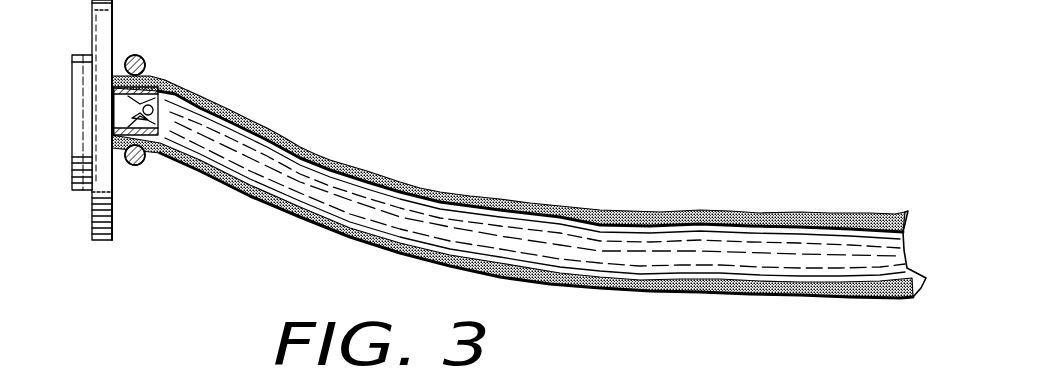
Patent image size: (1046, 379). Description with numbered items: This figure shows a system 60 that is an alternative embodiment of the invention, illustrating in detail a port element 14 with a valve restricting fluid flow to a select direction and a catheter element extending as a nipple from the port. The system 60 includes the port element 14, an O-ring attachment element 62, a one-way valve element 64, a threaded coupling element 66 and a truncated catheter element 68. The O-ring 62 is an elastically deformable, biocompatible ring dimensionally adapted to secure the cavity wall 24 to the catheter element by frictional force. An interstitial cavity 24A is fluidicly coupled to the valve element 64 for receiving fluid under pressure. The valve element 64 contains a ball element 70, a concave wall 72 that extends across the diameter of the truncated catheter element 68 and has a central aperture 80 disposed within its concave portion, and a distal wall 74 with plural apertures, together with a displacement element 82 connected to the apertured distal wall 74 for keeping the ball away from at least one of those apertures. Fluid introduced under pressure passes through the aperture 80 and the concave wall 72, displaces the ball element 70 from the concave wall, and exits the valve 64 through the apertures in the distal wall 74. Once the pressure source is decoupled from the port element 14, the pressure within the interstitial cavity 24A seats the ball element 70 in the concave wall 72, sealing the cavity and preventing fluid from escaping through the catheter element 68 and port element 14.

The port element 14 is at (112, 23).
The cavity wall 24 is at (412, 184).
The interstitial cavity 24A is at (513, 240).
The system 60 is at (519, 158).
The O-ring attachment element 62 is at (144, 63).
The one-way valve element 64 is at (128, 108).
The threaded coupling element 66 is at (83, 190).
The truncated catheter element 68 is at (150, 162).
The ball element 70 is at (190, 125).
The concave wall 72 is at (112, 124).
The distal wall 74 is at (215, 137).
The central aperture 80 is at (128, 110).
The displacement element 82 is at (215, 128).